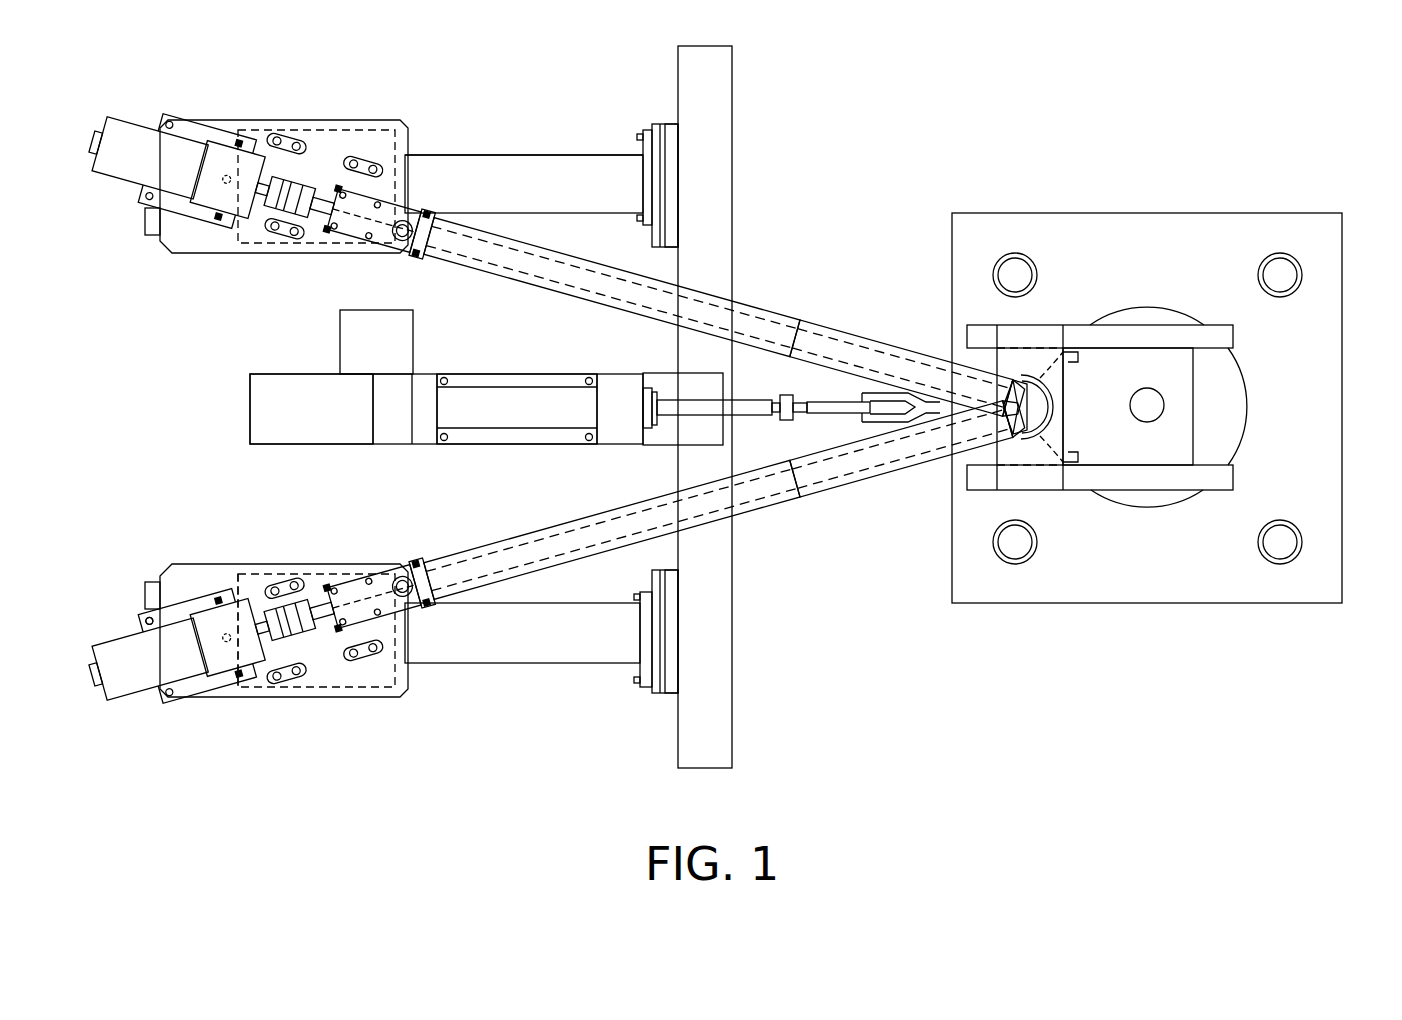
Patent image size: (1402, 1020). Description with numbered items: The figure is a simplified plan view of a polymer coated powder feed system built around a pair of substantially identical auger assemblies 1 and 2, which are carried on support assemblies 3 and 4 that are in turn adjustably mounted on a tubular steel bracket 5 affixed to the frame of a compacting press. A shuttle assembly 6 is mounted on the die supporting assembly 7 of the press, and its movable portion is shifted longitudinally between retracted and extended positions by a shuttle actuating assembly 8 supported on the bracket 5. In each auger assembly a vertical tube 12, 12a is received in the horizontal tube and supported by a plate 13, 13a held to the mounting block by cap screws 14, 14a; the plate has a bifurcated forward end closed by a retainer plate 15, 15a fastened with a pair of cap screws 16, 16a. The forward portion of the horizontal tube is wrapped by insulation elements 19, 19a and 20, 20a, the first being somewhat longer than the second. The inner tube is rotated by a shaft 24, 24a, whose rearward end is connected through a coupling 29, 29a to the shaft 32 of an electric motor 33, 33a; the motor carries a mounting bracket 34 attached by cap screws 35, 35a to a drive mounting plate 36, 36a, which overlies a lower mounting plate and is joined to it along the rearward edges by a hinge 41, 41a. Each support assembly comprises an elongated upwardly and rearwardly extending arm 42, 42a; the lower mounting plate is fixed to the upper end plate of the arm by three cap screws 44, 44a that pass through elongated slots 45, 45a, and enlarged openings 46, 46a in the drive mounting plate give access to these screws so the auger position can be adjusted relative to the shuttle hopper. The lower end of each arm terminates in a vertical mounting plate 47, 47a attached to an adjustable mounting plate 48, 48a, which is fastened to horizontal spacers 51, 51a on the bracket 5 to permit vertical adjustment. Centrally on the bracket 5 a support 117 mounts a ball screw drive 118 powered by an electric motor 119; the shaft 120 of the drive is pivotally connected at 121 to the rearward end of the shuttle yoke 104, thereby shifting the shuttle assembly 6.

The auger assembly 1 is at (557, 520).
The auger assembly 2 is at (505, 285).
The support assembly 3 is at (1133, 383).
The support assembly 4 is at (523, 148).
The tubular steel bracket 5 is at (724, 101).
The shuttle assembly 6 is at (1135, 492).
The die supporting assembly 7 is at (1130, 214).
The shuttle actuating assembly 8 is at (515, 452).
The vertical tube 12 is at (402, 580).
The vertical tube 12a is at (406, 242).
The plate 13 is at (362, 580).
The plate 13a is at (380, 248).
The cap screws 14 is at (332, 587).
The cap screws 14a is at (372, 247).
The retainer plate 15 is at (437, 588).
The retainer plate 15a is at (437, 216).
The cap screws 16 is at (418, 565).
The cap screws 16a is at (421, 208).
The insulation element 19 is at (602, 540).
The insulation element 19a is at (548, 268).
The insulation element 20 is at (847, 480).
The insulation element 20a is at (888, 352).
The shaft 24 is at (320, 622).
The shaft 24a is at (312, 222).
The coupling 29 is at (256, 652).
The coupling 29a is at (326, 168).
The shaft 32 is at (250, 577).
The electric motor 33 is at (140, 688).
The electric motor 33a is at (132, 136).
The mounting bracket 34 is at (215, 692).
The cap screws 35 is at (176, 580).
The cap screws 35a is at (194, 129).
The drive mounting plate 36 is at (187, 576).
The drive mounting plate 36a is at (200, 241).
The hinge 41 is at (138, 595).
The hinge 41a is at (145, 221).
The arm 42 is at (567, 643).
The arm 42a is at (590, 181).
The cap screws 44 is at (273, 585).
The cap screws 44a is at (293, 140).
The elongated slot 45 is at (307, 582).
The elongated slot 45a is at (290, 140).
The openings 46 is at (270, 588).
The openings 46a is at (282, 143).
The vertical mounting plate 47 is at (643, 675).
The vertical mounting plate 47a is at (645, 137).
The adjustable mounting plate 48 is at (653, 697).
The adjustable mounting plate 48a is at (653, 125).
The horizontal spacer 51 is at (670, 695).
The horizontal spacer 51a is at (667, 123).
The shuttle yoke 104 is at (845, 404).
The support 117 is at (663, 377).
The ball screw drive 118 is at (509, 413).
The electric motor 119 is at (326, 419).
The shaft 120 is at (742, 408).
The pivotal connection 121 is at (790, 393).